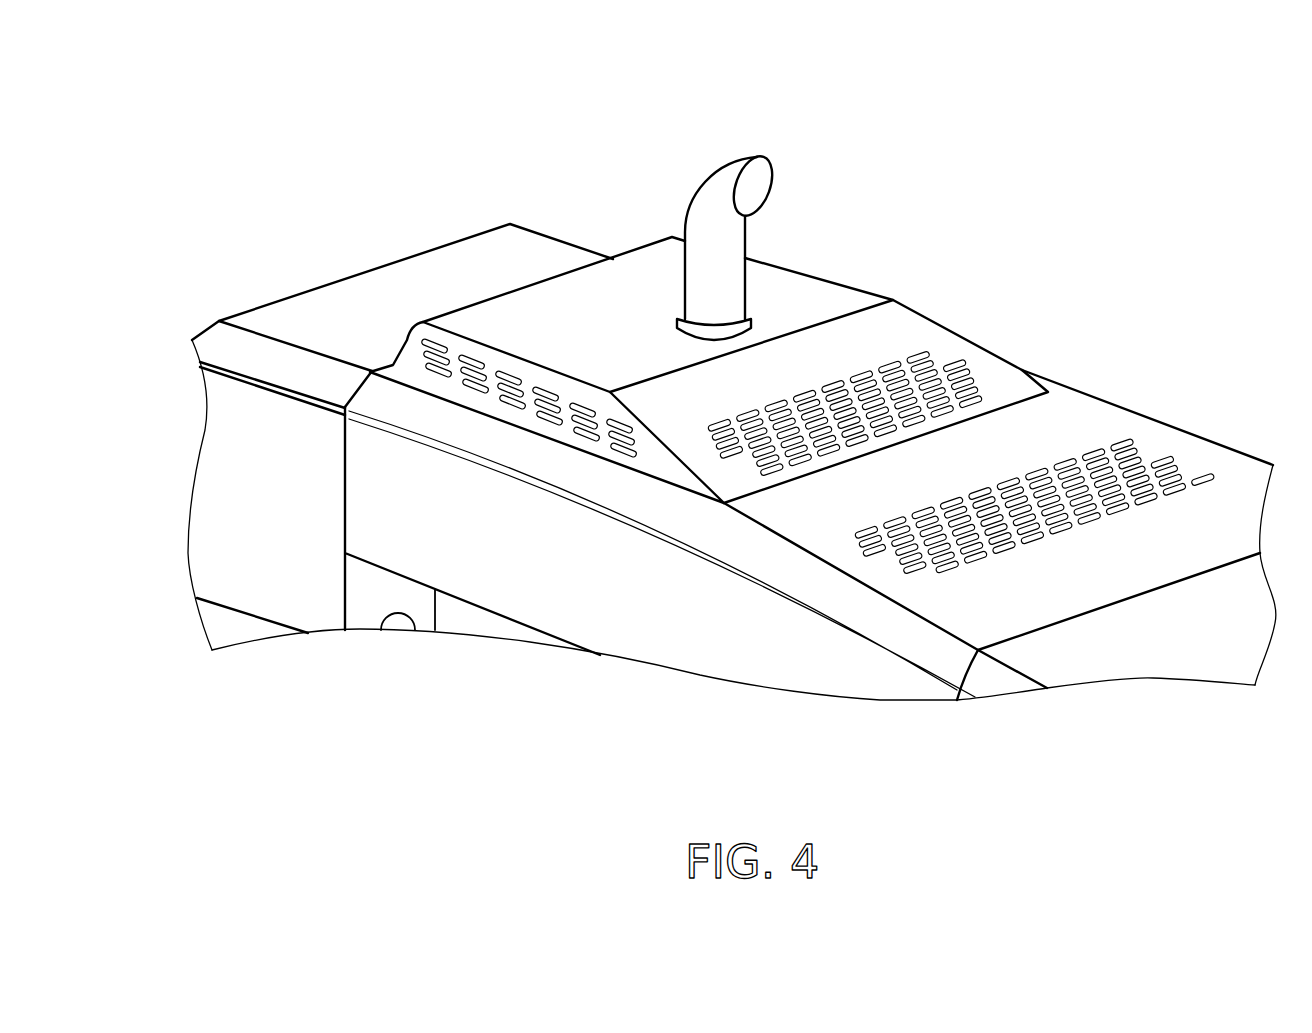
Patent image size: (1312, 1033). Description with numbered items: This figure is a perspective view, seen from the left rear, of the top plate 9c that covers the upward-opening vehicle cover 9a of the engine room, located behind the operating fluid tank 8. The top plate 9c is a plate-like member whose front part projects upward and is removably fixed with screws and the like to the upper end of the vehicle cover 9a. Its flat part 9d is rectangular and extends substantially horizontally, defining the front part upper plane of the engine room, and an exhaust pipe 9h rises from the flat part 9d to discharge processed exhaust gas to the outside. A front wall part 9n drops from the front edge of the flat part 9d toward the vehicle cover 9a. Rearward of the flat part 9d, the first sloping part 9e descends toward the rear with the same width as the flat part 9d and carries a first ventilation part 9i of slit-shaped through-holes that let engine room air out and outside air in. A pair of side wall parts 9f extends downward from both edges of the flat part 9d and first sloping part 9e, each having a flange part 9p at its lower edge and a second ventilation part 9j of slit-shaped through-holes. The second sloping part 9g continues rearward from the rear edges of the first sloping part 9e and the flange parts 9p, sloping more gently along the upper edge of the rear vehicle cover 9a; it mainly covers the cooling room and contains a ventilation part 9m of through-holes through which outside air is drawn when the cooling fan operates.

The operating fluid tank 8 is at (457, 262).
The vehicle cover 9a is at (550, 590).
The top plate 9c is at (950, 313).
The flat part 9d is at (780, 283).
The first sloping part 9e is at (970, 353).
The side wall parts 9f is at (412, 352).
The second sloping part 9g is at (1103, 413).
The exhaust pipe 9h is at (707, 183).
The first ventilation part 9i is at (888, 377).
The second ventilation parts 9j is at (467, 375).
The ventilation part 9m is at (1170, 450).
The front wall part 9n is at (410, 330).
The flange part 9p is at (557, 438).